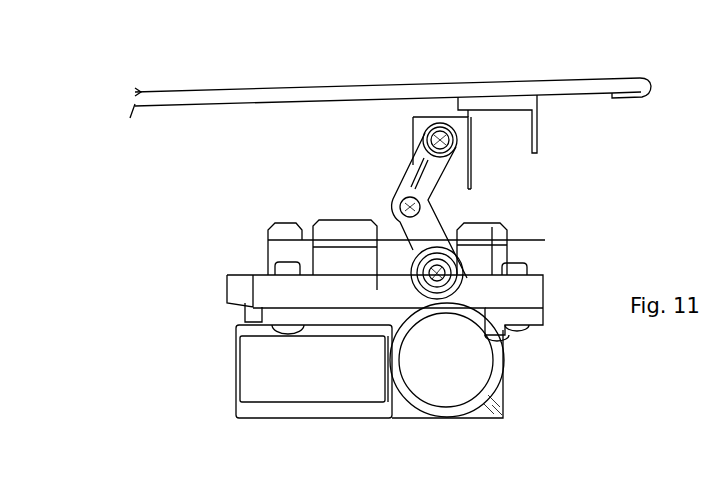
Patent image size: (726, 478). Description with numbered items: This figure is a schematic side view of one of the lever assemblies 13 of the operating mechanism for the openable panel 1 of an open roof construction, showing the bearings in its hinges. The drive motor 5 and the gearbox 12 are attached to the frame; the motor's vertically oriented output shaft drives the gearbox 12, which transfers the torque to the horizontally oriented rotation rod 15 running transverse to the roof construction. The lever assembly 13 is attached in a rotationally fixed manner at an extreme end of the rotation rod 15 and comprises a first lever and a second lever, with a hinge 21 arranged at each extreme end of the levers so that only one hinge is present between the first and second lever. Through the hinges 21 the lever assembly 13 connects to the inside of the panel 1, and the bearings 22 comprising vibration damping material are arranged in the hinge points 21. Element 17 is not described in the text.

The openable panel 1 is at (207, 92).
The bearing 22 is at (425, 137).
The lever assembly 13 is at (385, 177).
The hinge 21 is at (428, 205).
The gearbox 12 is at (285, 253).
The clamping block 17 is at (473, 252).
The rotation rod 15 is at (503, 378).
The drive motor 5 is at (287, 378).